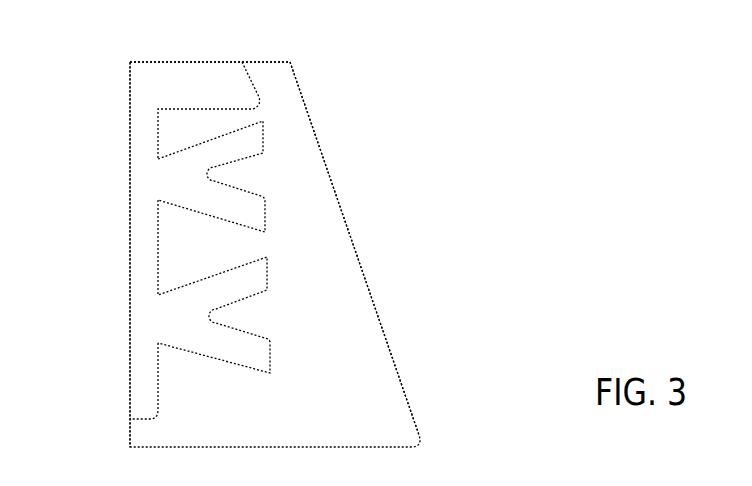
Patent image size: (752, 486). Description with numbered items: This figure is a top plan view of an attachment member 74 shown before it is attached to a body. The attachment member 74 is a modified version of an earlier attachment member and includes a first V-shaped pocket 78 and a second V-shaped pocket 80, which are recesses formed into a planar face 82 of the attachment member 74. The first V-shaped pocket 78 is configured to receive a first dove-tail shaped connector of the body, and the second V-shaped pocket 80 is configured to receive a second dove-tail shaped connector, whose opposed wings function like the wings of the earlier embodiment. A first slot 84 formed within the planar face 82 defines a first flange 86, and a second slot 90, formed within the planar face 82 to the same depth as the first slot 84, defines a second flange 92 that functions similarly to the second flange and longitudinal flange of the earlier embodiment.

The attachment member 74 is at (466, 222).
The first V-shaped pocket 78 is at (253, 142).
The second V-shaped pocket 80 is at (268, 277).
The planar face 82 is at (379, 335).
The first slot 84 is at (244, 68).
The first flange 86 is at (160, 64).
The second slot 90 is at (138, 417).
The second flange 92 is at (134, 325).